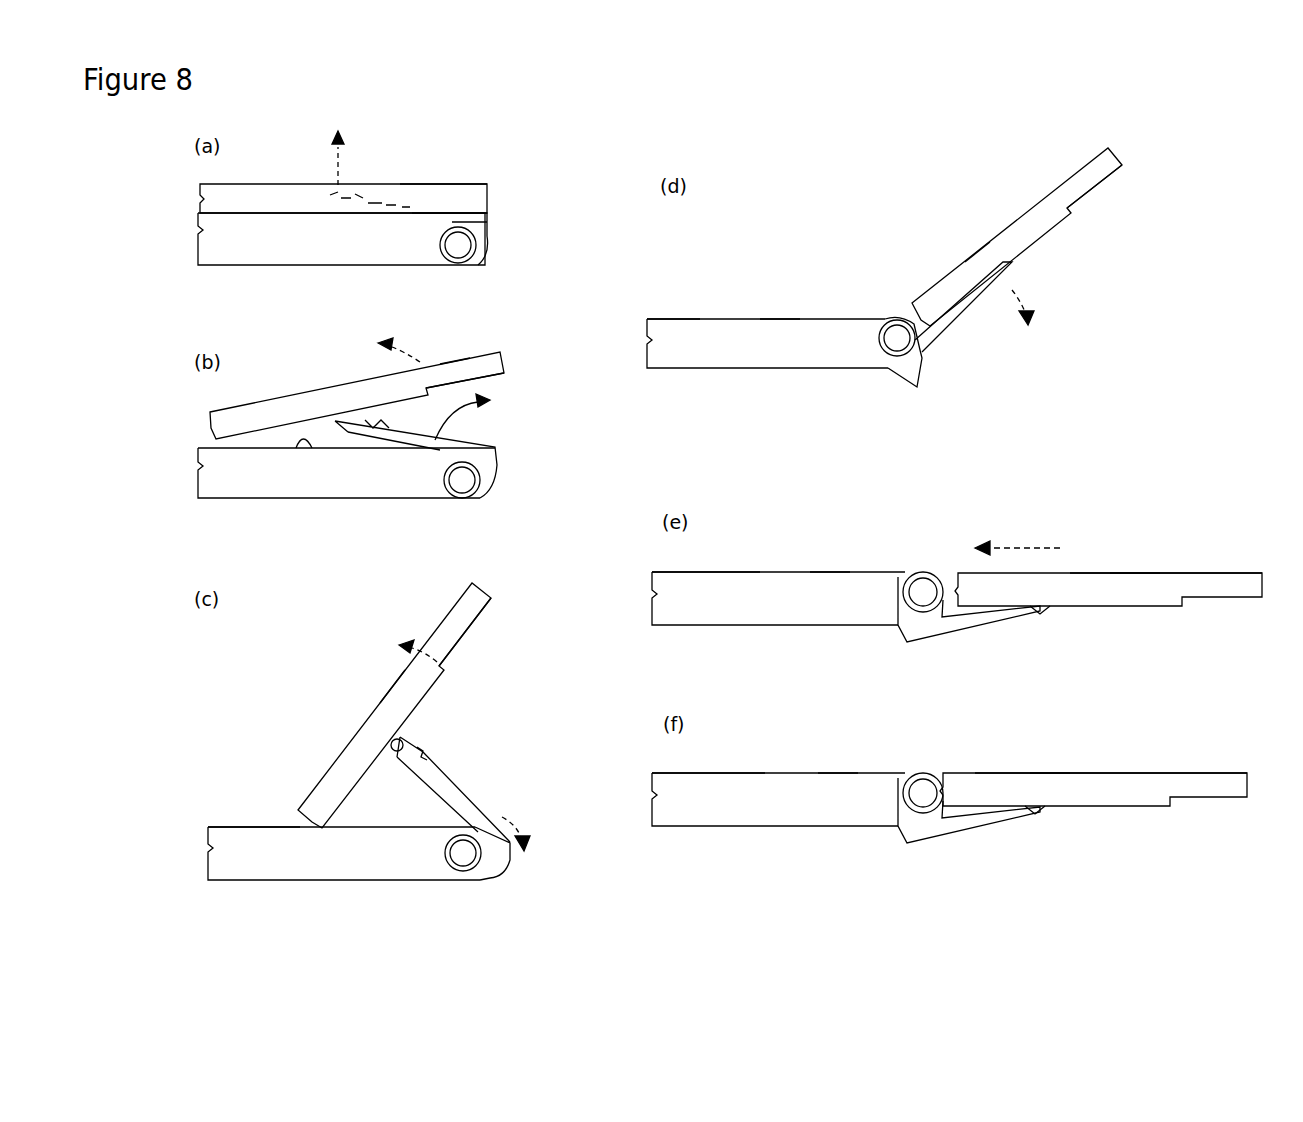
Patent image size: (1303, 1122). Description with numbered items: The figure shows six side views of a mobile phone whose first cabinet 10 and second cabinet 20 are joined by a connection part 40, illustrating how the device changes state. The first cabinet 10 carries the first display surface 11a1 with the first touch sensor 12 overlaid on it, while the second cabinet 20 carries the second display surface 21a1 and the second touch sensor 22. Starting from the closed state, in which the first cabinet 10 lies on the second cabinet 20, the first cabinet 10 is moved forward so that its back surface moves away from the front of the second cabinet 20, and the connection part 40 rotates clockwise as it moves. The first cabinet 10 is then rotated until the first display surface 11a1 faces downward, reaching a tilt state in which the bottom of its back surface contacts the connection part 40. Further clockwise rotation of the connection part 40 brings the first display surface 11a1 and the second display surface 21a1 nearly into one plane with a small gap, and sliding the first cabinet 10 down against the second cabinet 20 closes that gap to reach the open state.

The first cabinet 10 is at (249, 171).
The first display surface 11a1 is at (434, 184).
The first touch sensor 12 is at (472, 184).
The second cabinet 20 is at (367, 258).
The second display surface 21a1 is at (303, 443).
The second touch sensor 22 is at (237, 826).
The connection part 40 is at (478, 215).